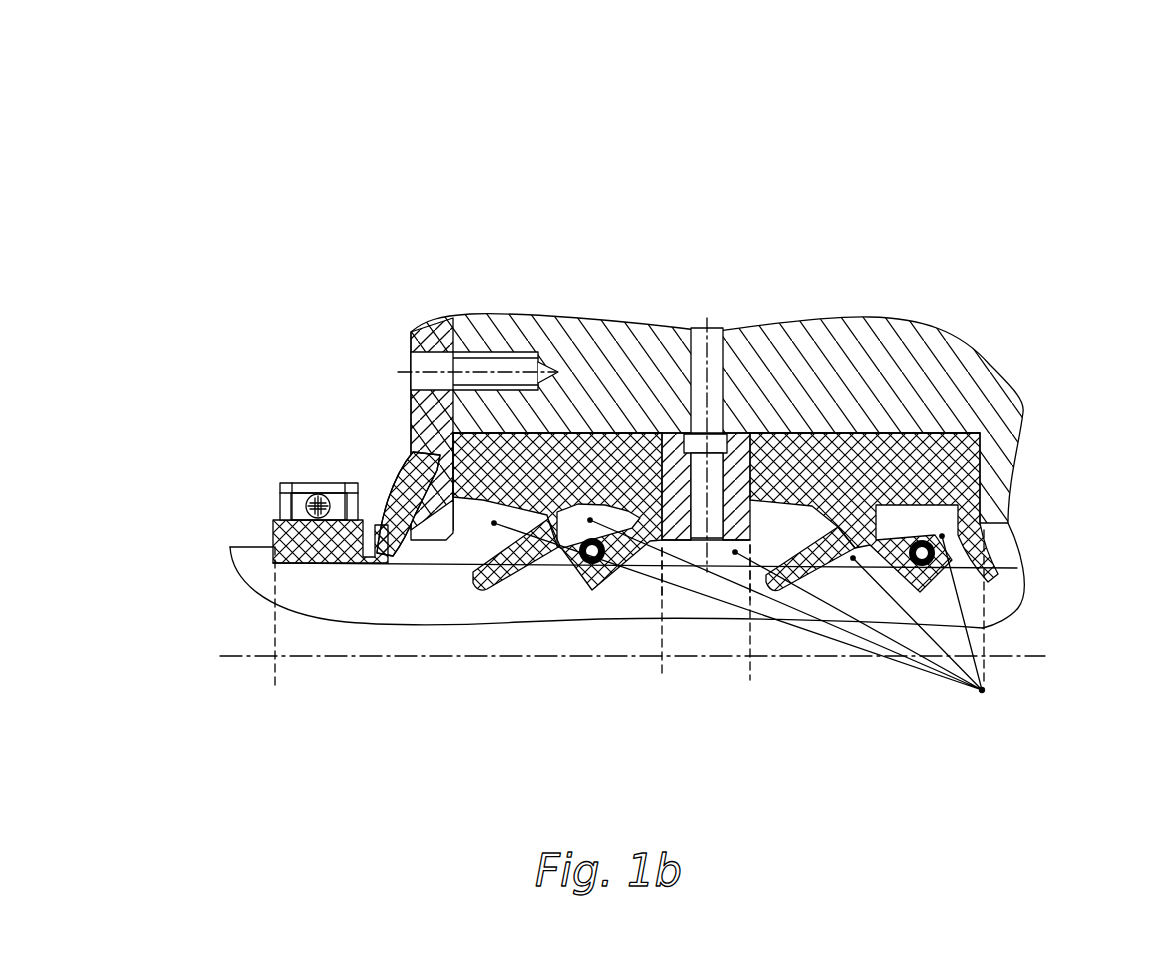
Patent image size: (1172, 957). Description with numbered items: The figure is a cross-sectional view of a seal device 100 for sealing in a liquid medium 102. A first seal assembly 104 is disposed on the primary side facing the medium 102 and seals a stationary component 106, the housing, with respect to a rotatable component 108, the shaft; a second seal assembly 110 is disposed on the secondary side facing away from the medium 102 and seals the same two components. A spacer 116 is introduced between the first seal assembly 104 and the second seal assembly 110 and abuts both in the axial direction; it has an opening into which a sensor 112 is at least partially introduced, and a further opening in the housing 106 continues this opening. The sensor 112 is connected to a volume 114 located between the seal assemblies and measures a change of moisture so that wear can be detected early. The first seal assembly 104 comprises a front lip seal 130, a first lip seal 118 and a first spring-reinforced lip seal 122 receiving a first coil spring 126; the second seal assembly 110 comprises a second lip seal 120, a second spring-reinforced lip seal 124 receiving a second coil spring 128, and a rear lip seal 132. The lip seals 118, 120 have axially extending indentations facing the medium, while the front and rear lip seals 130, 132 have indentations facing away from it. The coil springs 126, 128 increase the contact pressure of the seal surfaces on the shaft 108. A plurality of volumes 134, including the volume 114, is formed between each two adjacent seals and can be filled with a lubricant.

The seal device 100 is at (1078, 124).
The liquid medium 102 is at (297, 340).
The first seal assembly 104 is at (646, 527).
The stationary component 106 is at (583, 338).
The rotatable component 108 is at (703, 642).
The second seal assembly 110 is at (662, 607).
The sensor 112 is at (717, 338).
The volume 114 is at (688, 553).
The spacer 116 is at (630, 413).
The first lip seal 118 is at (503, 500).
The second lip seal 120 is at (765, 562).
The first spring-reinforced lip seal 122 is at (627, 508).
The second spring-reinforced lip seal 124 is at (632, 499).
The first coil spring 126 is at (580, 553).
The second coil spring 128 is at (986, 651).
The front lip seal 130 is at (282, 483).
The rear lip seal 132 is at (980, 523).
The plurality of volumes 134 is at (983, 693).